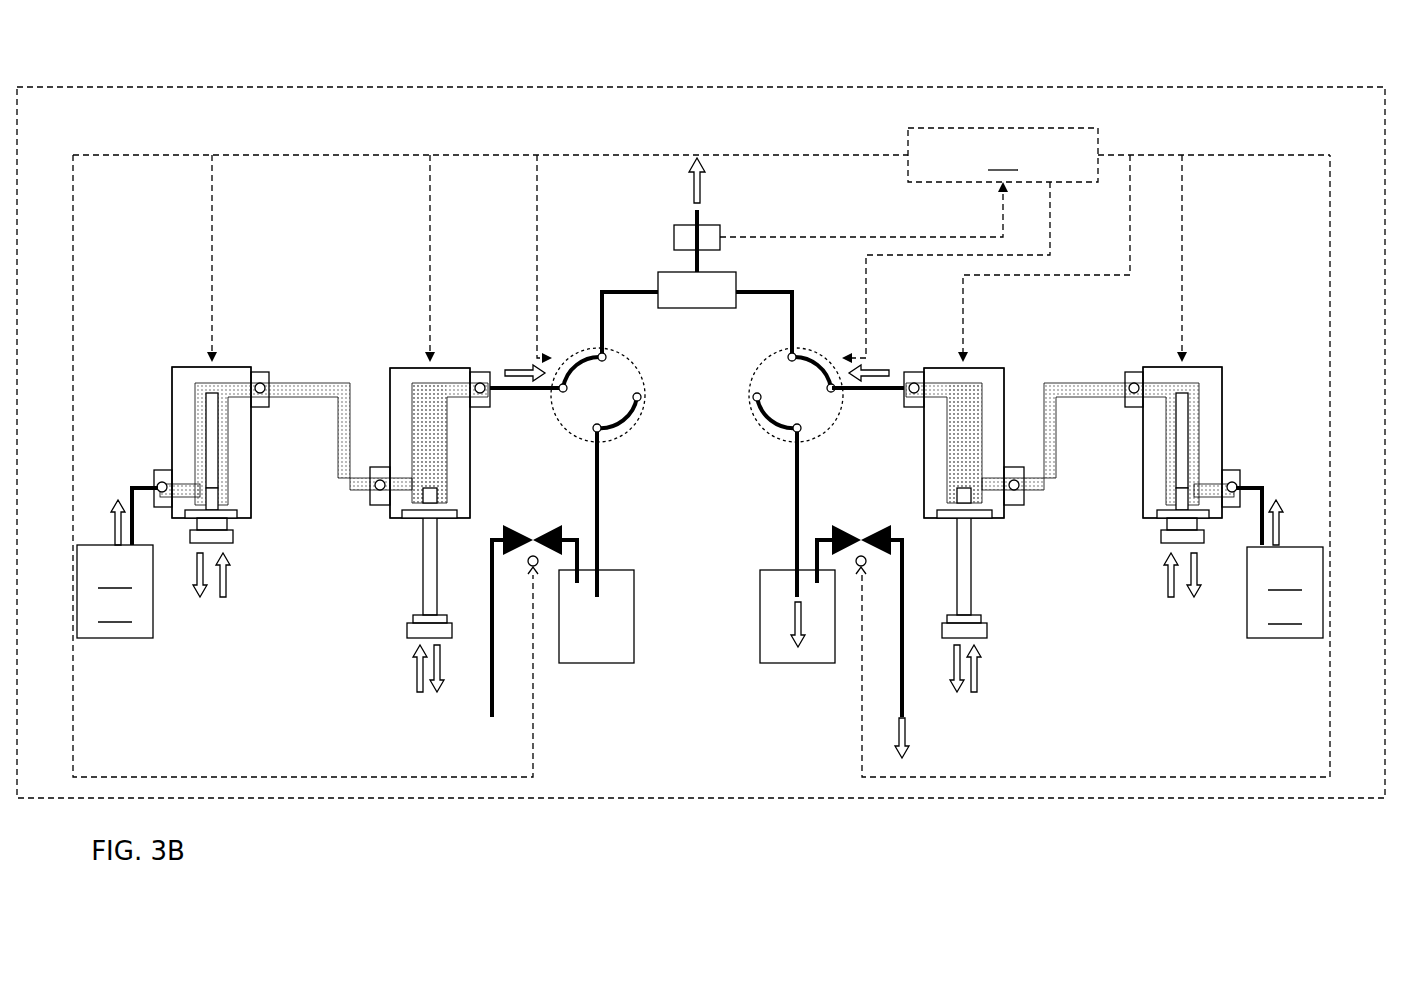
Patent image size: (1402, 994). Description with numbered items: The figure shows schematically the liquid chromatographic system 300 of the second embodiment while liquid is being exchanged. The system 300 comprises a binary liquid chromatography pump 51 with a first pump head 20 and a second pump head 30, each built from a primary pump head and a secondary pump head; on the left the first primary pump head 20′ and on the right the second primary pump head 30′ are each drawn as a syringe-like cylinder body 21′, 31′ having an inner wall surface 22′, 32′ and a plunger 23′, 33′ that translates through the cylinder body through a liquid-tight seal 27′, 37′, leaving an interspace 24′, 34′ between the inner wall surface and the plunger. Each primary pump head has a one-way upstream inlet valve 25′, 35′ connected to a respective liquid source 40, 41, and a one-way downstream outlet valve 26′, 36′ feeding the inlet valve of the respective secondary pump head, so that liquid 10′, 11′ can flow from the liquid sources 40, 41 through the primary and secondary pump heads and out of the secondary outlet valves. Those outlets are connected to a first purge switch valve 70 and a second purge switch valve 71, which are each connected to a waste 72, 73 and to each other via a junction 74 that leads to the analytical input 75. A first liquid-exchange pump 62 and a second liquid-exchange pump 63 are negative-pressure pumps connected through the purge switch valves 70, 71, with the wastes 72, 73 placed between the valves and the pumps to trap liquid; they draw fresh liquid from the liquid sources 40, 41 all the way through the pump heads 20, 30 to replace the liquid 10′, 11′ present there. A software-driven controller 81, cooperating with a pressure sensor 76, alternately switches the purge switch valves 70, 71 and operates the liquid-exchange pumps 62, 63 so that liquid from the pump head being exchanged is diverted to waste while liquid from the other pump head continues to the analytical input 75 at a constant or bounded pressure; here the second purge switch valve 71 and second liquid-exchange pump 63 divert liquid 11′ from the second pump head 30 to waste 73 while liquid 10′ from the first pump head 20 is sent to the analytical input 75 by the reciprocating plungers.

The liquid chromatographic system 300 is at (339, 88).
The binary liquid chromatography pump 51 is at (246, 142).
The software-driven controller 81 is at (1003, 155).
The first pump head 20 is at (298, 643).
The second pump head 30 is at (1100, 665).
The first primary pump head 20′ is at (180, 364).
The second primary pump head 30′ is at (1218, 364).
The cylinder body 21′ is at (172, 418).
The cylinder body 31′ is at (1220, 418).
The inner wall surface 22′ is at (200, 452).
The inner wall surface 32′ is at (1172, 452).
The plunger 23′ is at (216, 440).
The plunger 33′ is at (1190, 443).
The interspace 24′ is at (222, 485).
The interspace 34′ is at (1170, 485).
The one-way upstream inlet valve 25′ is at (164, 510).
The one-way upstream inlet valve 35′ is at (1230, 510).
The one-way downstream outlet valve 26′ is at (262, 371).
The one-way downstream outlet valve 36′ is at (1133, 371).
The liquid-tight seal 27′ is at (238, 520).
The liquid-tight seal 37′ is at (1155, 520).
The liquid 10′ is at (422, 393).
The liquid 11′ is at (973, 393).
The liquid source 40 is at (118, 639).
The liquid source 41 is at (1290, 639).
The first liquid-exchange pump 62 is at (528, 566).
The second liquid-exchange pump 63 is at (868, 566).
The first purge switch valve 70 is at (636, 440).
The second purge switch valve 71 is at (752, 418).
The waste 72 is at (635, 595).
The waste 73 is at (758, 612).
The junction 74 is at (697, 310).
The analytical input 75 is at (700, 213).
The pressure sensor 76 is at (672, 237).